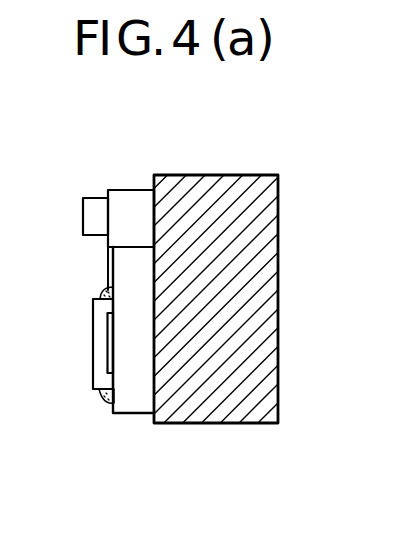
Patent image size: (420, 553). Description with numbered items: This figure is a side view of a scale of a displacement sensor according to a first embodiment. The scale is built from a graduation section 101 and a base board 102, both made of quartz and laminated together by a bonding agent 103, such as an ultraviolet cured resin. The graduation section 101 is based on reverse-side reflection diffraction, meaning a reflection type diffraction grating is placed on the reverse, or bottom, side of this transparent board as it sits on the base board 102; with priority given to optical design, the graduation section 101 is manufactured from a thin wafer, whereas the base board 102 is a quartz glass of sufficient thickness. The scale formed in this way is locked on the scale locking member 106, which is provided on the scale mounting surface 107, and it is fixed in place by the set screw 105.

The semiconductor chip 101 is at (95, 387).
The lead frame 102 is at (138, 410).
The solder 103 is at (103, 291).
The electrode terminal 105 is at (96, 203).
The resin package 106 is at (133, 200).
The heat sink 107 is at (213, 178).